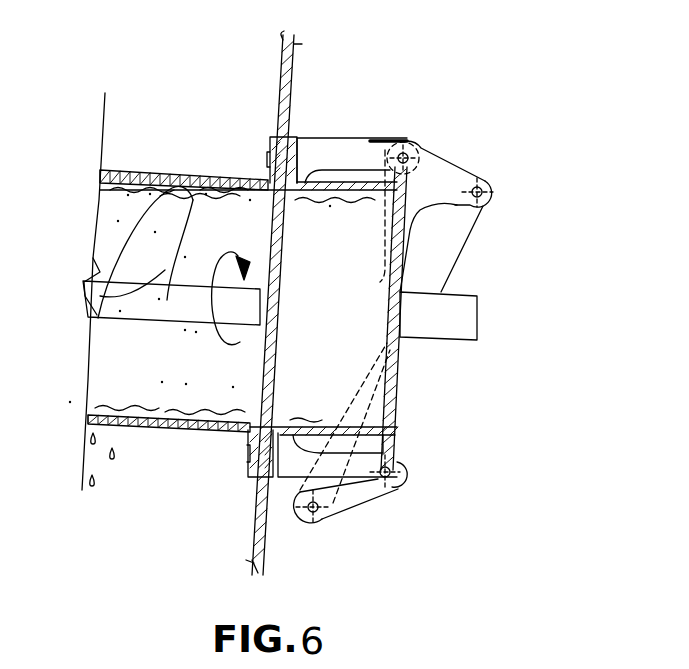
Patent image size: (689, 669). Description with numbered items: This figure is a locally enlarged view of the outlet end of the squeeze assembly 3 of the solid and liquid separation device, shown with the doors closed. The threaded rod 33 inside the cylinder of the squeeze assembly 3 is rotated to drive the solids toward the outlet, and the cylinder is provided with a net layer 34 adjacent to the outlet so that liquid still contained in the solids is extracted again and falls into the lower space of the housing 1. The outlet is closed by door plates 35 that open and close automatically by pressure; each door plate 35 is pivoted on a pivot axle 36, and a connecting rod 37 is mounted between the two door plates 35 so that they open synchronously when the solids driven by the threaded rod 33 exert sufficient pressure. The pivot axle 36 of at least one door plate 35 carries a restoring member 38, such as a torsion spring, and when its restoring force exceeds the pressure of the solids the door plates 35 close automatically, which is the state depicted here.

The housing 1 is at (297, 70).
The squeeze assembly 3 is at (425, 75).
The threaded rod 33 is at (193, 180).
The net layer 34 is at (123, 427).
The door plates 35 is at (404, 275).
The pivot axle 36 is at (417, 150).
The connecting rod 37 is at (463, 228).
The restoring member 38 is at (392, 140).